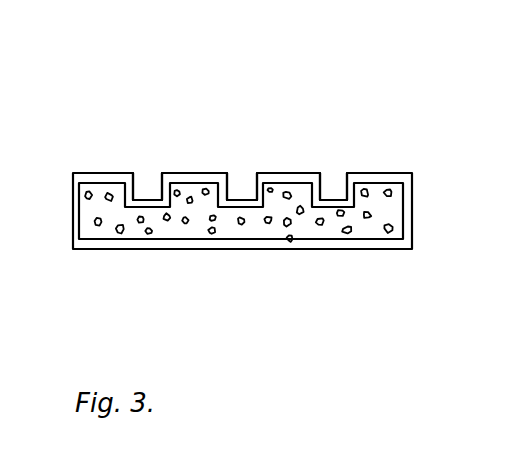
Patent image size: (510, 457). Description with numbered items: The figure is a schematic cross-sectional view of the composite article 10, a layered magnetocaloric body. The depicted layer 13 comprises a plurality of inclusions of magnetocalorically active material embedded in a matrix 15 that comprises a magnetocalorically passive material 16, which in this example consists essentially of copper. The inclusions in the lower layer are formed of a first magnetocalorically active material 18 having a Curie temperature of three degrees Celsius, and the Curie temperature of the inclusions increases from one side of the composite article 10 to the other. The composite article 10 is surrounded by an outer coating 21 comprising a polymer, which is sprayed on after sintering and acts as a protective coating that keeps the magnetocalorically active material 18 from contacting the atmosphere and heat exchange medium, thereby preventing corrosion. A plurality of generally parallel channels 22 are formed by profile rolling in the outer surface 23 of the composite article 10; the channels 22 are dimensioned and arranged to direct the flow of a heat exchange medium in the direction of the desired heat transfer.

The composite article 10 is at (414, 80).
The third layer 13 is at (78, 220).
The matrix 15 is at (168, 232).
The magnetocalorically passive material 16 is at (250, 233).
The first magnetocalorically active material 18 is at (120, 234).
The outer coating 21 is at (407, 215).
The channels 22 is at (330, 192).
The outer surface 23 is at (390, 237).